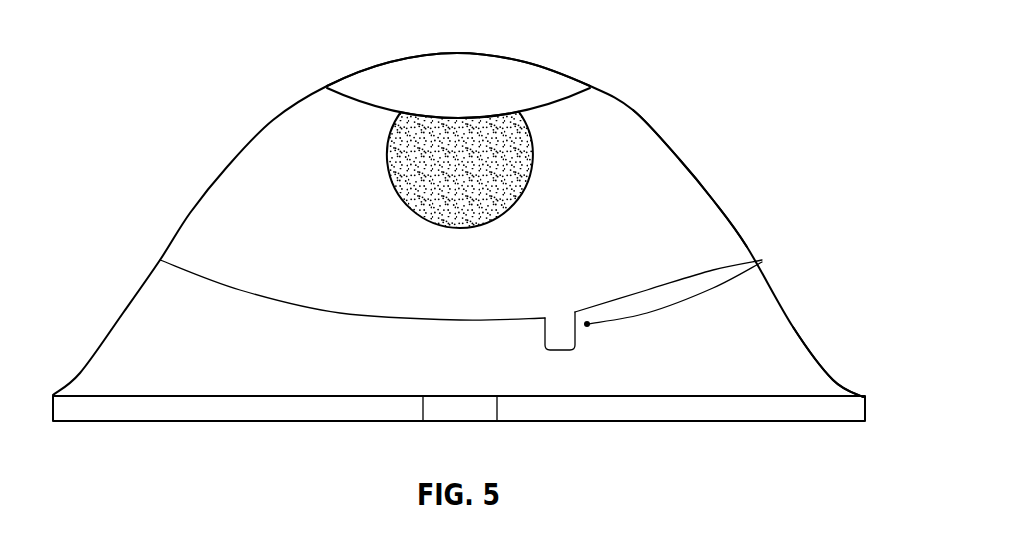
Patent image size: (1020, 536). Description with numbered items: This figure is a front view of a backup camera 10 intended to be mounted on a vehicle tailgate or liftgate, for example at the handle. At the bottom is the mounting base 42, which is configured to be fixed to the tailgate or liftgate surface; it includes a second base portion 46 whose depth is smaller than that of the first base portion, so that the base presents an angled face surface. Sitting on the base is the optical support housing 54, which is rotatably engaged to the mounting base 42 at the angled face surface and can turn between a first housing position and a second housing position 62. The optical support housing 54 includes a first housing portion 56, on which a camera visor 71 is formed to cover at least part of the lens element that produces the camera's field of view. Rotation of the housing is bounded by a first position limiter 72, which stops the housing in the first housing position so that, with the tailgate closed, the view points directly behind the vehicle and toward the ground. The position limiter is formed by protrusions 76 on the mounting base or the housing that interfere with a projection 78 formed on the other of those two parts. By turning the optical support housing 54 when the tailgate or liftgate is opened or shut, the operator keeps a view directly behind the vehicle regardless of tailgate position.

The backup camera 10 is at (470, 251).
The mounting base 42 is at (118, 422).
The second base portion 46 is at (813, 373).
The optical support housing 54 is at (632, 121).
The first housing portion 56 is at (633, 289).
The second housing position 62 is at (758, 198).
The camera visor 71 is at (510, 77).
The first position limiter 72 is at (587, 340).
The protrusions 76 is at (762, 260).
The projection 78 is at (549, 337).